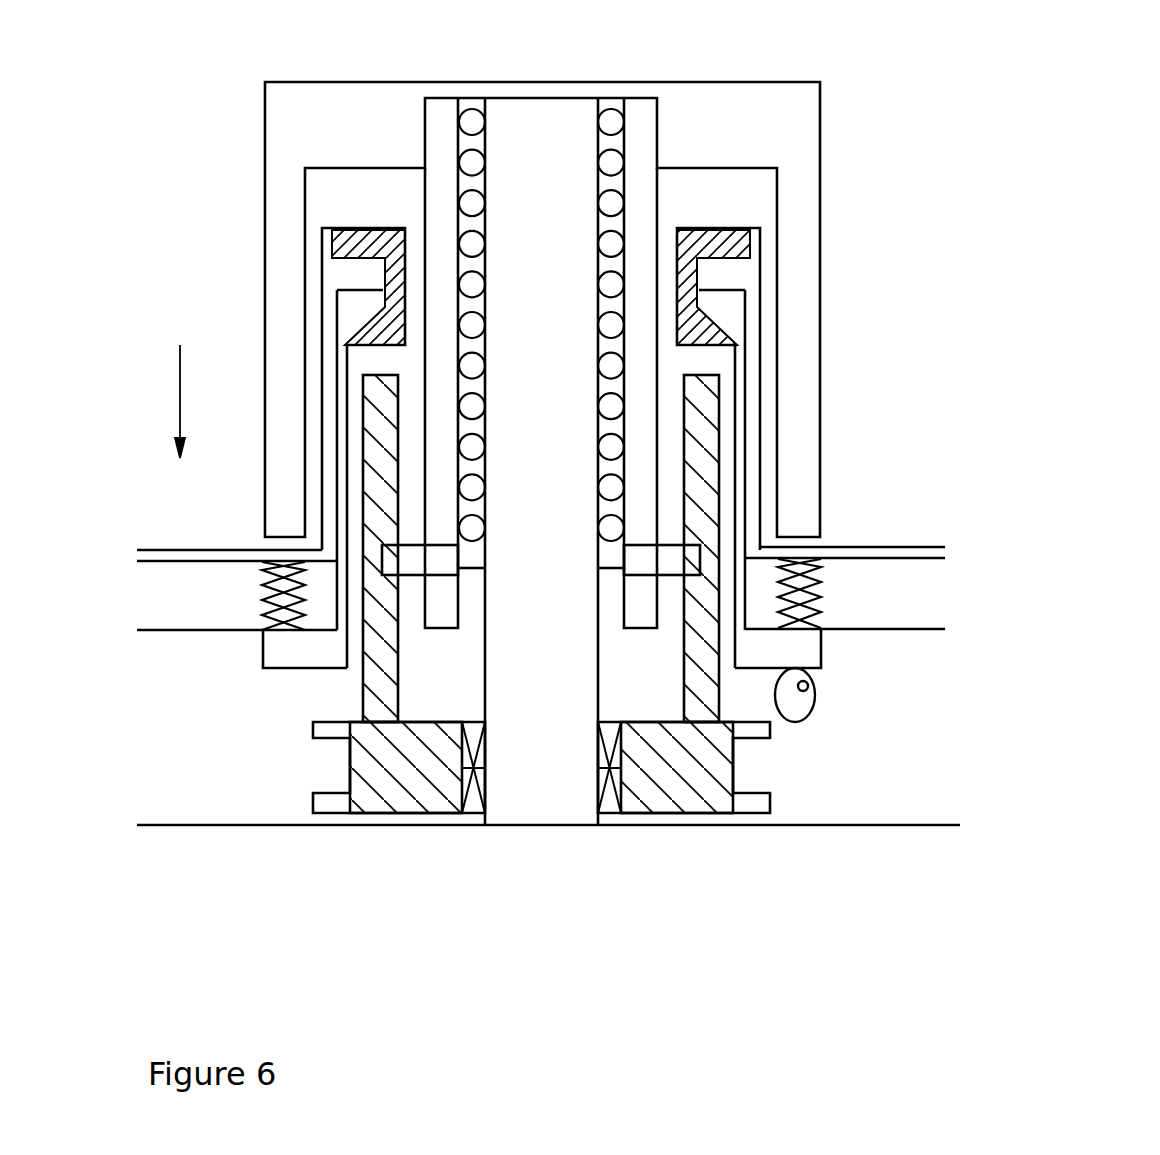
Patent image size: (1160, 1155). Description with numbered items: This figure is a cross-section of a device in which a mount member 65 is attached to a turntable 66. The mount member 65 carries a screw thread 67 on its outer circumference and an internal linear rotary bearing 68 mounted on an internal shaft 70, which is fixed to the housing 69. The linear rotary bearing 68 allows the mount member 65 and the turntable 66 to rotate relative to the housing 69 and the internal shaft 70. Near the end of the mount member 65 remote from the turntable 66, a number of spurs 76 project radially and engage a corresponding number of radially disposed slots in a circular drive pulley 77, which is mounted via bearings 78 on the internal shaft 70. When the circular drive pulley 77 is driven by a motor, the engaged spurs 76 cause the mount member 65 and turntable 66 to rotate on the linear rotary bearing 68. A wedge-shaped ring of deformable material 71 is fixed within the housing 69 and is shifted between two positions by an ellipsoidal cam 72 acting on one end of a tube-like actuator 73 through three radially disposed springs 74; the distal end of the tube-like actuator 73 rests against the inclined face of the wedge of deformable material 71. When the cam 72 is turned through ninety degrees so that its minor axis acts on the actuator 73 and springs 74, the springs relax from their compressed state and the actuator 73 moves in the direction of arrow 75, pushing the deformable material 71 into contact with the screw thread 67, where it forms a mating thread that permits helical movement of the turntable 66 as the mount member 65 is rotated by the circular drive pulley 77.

The mount member 65 is at (425, 112).
The turntable 66 is at (265, 101).
The screw thread 67 is at (658, 137).
The linear rotary bearing 68 is at (470, 107).
The housing 69 is at (833, 800).
The internal shaft 70 is at (562, 719).
The ring of deformable material 71 is at (695, 227).
The ellipsoidal cam 72 is at (818, 713).
The tube-like actuator 73 is at (277, 657).
The springs 74 is at (820, 583).
The arrow 75 is at (201, 400).
The spurs 76 is at (410, 562).
The circular drive pulley 77 is at (313, 730).
The bearings 78 is at (612, 815).